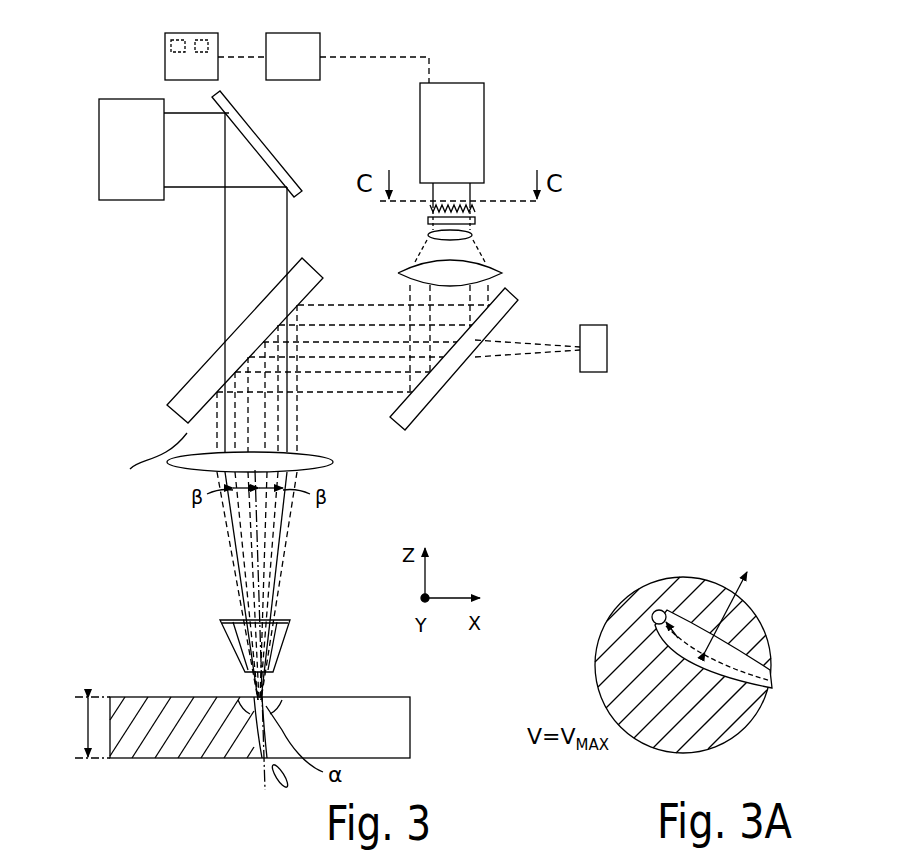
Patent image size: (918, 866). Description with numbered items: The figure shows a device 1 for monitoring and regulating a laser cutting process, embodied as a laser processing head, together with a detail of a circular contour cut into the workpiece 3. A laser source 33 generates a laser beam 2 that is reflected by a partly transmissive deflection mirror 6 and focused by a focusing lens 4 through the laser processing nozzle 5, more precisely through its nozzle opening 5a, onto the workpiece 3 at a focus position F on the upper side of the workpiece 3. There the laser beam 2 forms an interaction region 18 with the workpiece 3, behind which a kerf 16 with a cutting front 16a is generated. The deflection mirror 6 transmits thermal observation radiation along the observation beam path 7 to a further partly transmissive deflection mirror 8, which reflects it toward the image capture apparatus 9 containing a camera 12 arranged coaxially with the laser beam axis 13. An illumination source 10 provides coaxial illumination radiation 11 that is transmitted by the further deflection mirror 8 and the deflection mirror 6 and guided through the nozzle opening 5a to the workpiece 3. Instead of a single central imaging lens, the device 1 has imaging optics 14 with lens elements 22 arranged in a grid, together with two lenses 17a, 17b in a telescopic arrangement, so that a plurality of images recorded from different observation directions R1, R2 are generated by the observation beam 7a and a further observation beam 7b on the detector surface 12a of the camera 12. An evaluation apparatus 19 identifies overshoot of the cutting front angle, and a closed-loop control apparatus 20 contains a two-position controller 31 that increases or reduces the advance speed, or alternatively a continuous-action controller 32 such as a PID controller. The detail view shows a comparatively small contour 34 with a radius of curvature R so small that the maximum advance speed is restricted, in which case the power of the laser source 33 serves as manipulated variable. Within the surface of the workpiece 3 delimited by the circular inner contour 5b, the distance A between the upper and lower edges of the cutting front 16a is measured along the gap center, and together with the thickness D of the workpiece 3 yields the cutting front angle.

In FIG. 3, the device 1 is at (145, 297).
In FIG. 3, the laser beam 2 is at (243, 207).
In FIG. 3, the workpiece 3 is at (168, 748).
In FIG. 3A, the workpiece 3 is at (718, 725).
In FIG. 3, the focusing lens 4 is at (205, 462).
In FIG. 3, the laser processing nozzle 5 is at (224, 640).
In FIG. 3, the nozzle opening 5a is at (285, 622).
In FIG. 3, the circular inner contour 5b is at (230, 620).
In FIG. 3A, the circular inner contour 5b is at (680, 583).
In FIG. 3, the deflection mirror 6 is at (205, 378).
In FIG. 3, the observation beam path 7 is at (390, 296).
In FIG. 3, the observation beam 7a is at (433, 195).
In FIG. 3, the illumination beam 7b is at (470, 196).
In FIG. 3, the further partly transmissive deflection mirror 8 is at (440, 380).
In FIG. 3, the image capture apparatus 9 is at (585, 262).
In FIG. 3, the illumination source 10 is at (592, 360).
In FIG. 3, the illumination radiation 11 is at (533, 352).
In FIG. 3, the camera 12 is at (455, 100).
In FIG. 3, the detector surface 12a is at (472, 188).
In FIG. 3, the laser beam axis 13 is at (258, 527).
In FIG. 3, the imaging optics 14 is at (525, 201).
In FIG. 3, the kerf 16 is at (395, 712).
In FIG. 3A, the kerf 16 is at (769, 655).
In FIG. 3A, the cutting front 16a is at (655, 616).
In FIG. 3, the lens 17a is at (425, 230).
In FIG. 3, the lens 17b is at (500, 278).
In FIG. 3, the interaction region 18 is at (245, 690).
In FIG. 3, the evaluation apparatus 19 is at (307, 53).
In FIG. 3, the closed-loop control apparatus 20 is at (185, 55).
In FIG. 3, the first cylindrical lenses 22 is at (425, 212).
In FIG. 3, the two-position controller 31 is at (212, 38).
In FIG. 3, the continuous-action controller 32 is at (170, 38).
In FIG. 3, the laser source 33 is at (113, 154).
In FIG. 3A, the contour 34 is at (782, 673).
In FIG. 3A, the distance A is at (662, 610).
In FIG. 3A, the radius of curvature R is at (735, 612).
In FIG. 3, the observation direction R1 is at (228, 535).
In FIG. 3, the observation direction R2 is at (291, 535).
In FIG. 3, the thickness D is at (88, 727).
In FIG. 3, the focus position F is at (268, 690).